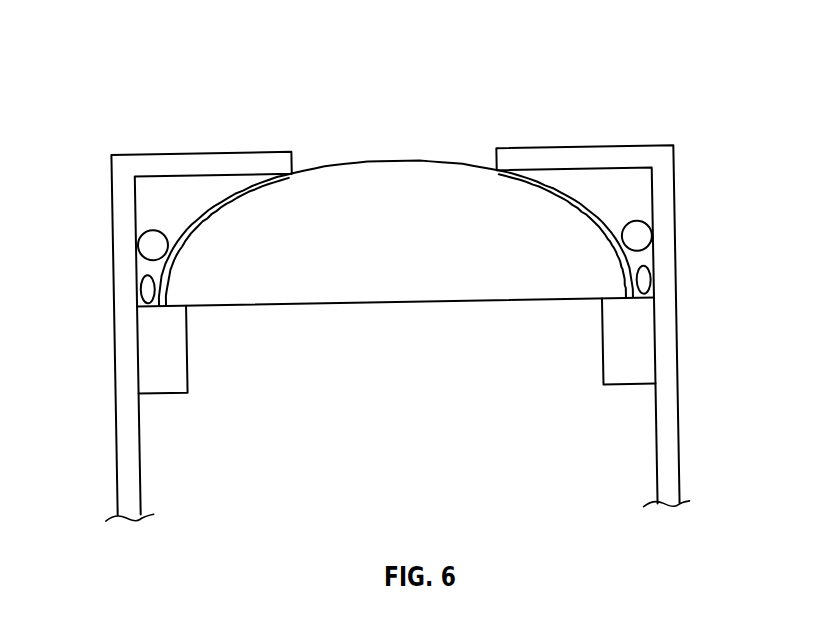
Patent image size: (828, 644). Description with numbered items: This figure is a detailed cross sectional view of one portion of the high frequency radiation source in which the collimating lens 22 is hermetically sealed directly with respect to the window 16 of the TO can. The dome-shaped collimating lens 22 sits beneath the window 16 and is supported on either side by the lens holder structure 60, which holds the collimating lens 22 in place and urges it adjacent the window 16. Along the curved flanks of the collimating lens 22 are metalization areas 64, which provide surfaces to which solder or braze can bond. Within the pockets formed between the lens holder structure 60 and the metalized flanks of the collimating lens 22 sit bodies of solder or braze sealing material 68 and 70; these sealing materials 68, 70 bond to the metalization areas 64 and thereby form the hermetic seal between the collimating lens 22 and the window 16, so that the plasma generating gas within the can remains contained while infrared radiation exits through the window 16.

The window 16 is at (398, 152).
The collimating lens 22 is at (457, 184).
The lens holder structure 60 is at (179, 349).
The metalization areas 64 is at (183, 236).
The sealing material 68 is at (154, 228).
The sealing material 70 is at (143, 291).